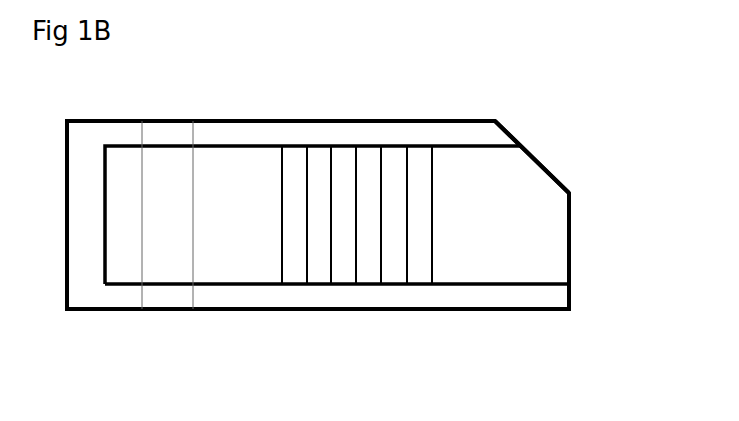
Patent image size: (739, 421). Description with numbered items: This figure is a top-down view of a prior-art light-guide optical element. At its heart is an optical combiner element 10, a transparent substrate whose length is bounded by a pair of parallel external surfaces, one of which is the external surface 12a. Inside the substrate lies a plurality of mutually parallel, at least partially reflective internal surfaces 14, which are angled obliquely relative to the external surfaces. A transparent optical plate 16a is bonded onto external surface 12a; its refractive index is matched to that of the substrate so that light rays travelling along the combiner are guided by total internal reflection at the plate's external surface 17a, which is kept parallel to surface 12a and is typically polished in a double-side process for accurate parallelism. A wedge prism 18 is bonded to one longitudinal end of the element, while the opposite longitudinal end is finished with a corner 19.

The optical combiner element 10 is at (542, 285).
The external surface 12a is at (467, 248).
The partially reflective internal surfaces 14 is at (307, 265).
The transparent optical plate 16a is at (462, 120).
The external surface of optical plate 17a is at (323, 134).
The wedge prism 18 is at (155, 298).
The corner 19 is at (545, 170).